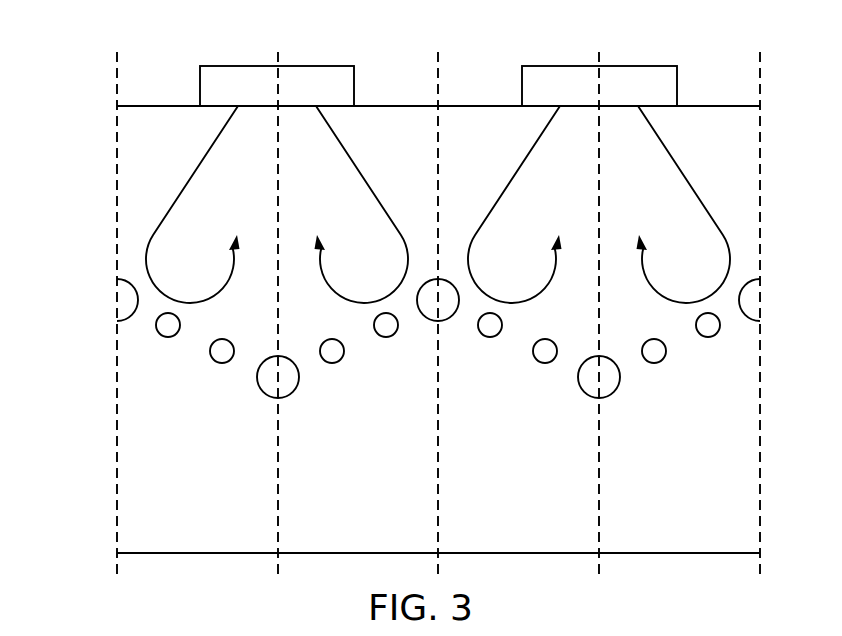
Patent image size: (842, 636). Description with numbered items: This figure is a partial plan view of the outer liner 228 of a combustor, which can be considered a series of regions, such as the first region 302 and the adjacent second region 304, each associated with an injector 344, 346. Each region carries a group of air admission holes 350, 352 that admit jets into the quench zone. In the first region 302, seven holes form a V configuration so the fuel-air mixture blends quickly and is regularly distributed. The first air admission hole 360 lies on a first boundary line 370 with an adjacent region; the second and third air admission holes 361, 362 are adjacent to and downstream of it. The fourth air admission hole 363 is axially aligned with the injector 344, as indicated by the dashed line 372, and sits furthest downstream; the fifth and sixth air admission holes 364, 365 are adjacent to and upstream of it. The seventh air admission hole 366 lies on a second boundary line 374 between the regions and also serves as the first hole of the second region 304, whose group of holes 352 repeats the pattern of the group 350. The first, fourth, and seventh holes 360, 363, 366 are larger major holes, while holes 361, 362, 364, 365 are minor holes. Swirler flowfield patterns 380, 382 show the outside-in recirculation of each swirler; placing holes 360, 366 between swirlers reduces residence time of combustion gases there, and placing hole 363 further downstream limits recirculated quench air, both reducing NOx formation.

The outer liner 228 is at (90, 96).
The first region 302 is at (162, 114).
The second region 304 is at (490, 108).
The injector 344 is at (227, 70).
The injector 346 is at (558, 70).
The group of air admission holes 350 is at (182, 416).
The group of air admission holes 352 is at (527, 391).
The first air admission hole 360 is at (128, 284).
The second air admission hole 361 is at (165, 338).
The third air admission hole 362 is at (222, 364).
The fourth air admission hole 363 is at (293, 391).
The fifth air admission hole 364 is at (333, 364).
The sixth air admission hole 365 is at (390, 338).
The seventh air admission hole 366 is at (451, 321).
The first boundary line 370 is at (117, 170).
The dashed line 372 is at (282, 184).
The second boundary line 374 is at (436, 158).
The swirler flowfield pattern 380 is at (198, 172).
The swirler flowfield pattern 382 is at (522, 172).